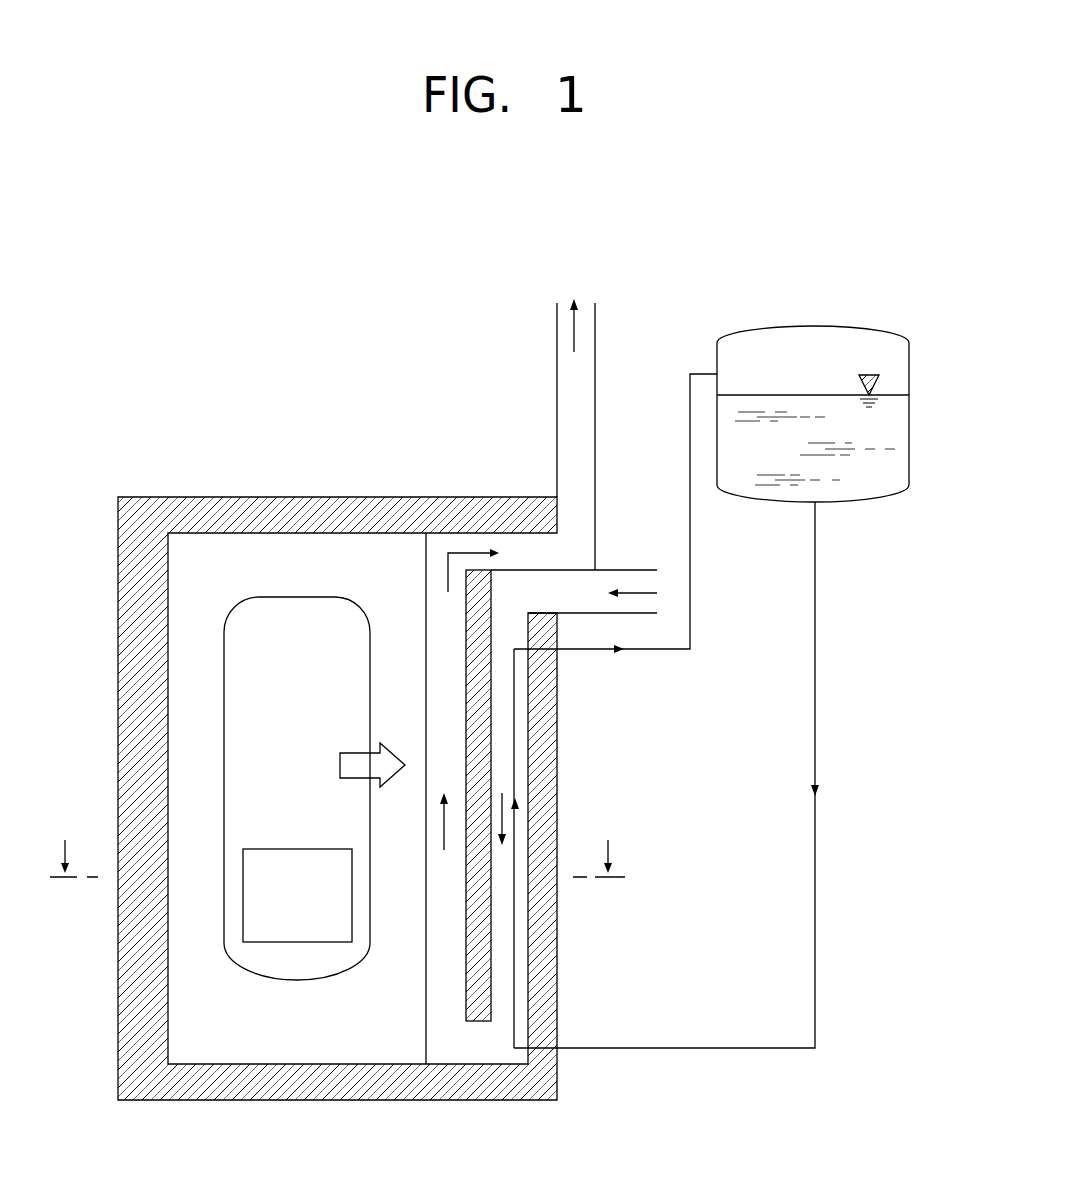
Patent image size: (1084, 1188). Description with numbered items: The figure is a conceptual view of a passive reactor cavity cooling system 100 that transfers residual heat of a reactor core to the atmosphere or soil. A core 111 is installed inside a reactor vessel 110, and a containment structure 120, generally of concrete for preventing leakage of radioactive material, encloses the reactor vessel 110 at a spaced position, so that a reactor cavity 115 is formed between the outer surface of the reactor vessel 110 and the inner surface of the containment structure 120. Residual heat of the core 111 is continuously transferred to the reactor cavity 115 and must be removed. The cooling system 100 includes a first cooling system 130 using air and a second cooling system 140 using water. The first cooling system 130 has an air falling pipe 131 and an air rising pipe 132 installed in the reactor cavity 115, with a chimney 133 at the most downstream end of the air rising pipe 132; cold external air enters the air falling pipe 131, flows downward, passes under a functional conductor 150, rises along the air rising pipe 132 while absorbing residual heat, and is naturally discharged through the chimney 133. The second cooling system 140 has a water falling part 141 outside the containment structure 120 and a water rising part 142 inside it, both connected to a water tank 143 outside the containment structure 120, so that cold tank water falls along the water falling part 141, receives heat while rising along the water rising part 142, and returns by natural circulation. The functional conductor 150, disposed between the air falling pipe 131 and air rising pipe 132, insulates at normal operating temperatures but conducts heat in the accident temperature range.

The passive reactor cavity cooling system 100 is at (216, 355).
The reactor vessel 110 is at (212, 788).
The core 111 is at (245, 908).
The reactor cavity 115 is at (244, 746).
The containment structure 120 is at (125, 553).
The first cooling system 130 is at (492, 423).
The air falling pipe 131 is at (498, 683).
The air rising pipe 132 is at (433, 617).
The chimney 133 is at (557, 466).
The second cooling system 140 is at (905, 560).
The water falling part 141 is at (816, 705).
The water rising part 142 is at (690, 619).
The water tank 143 is at (838, 503).
The functional conductor 150 is at (479, 1021).